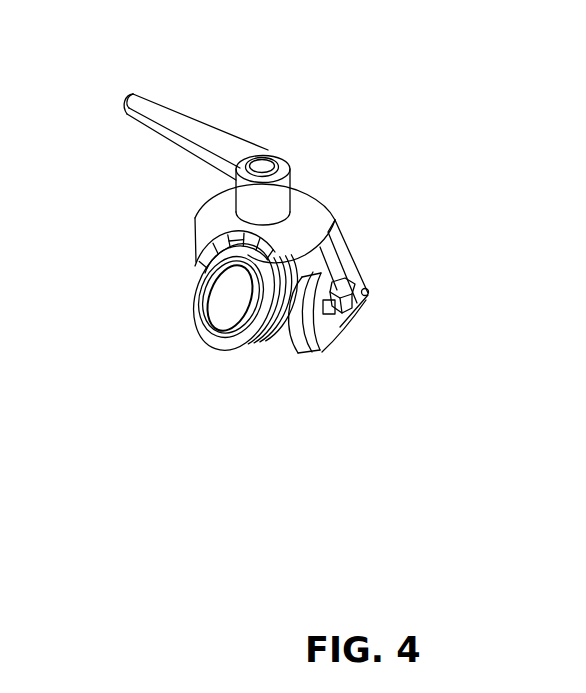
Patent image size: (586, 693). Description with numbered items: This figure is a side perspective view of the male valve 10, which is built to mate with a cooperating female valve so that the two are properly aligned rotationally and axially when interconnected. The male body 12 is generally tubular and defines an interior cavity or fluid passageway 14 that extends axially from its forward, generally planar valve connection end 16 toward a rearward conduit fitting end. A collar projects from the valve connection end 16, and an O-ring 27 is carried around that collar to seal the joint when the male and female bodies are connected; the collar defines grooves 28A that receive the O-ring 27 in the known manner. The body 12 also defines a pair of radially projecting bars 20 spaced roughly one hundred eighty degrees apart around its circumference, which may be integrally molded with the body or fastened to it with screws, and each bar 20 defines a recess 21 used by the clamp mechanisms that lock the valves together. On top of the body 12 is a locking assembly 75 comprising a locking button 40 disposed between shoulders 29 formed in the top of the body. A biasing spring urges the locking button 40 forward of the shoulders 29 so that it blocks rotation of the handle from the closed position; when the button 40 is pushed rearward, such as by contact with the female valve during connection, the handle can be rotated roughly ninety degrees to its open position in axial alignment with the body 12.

The male valve 10 is at (397, 116).
The male body 12 is at (323, 270).
The interior cavity or fluid passageway 14 is at (221, 340).
The valve connection end 16 is at (232, 360).
The radially projecting bars 20 is at (318, 348).
The recess 21 is at (337, 320).
The O-ring 27 is at (267, 353).
The grooves 28A is at (290, 353).
The shoulders 29 is at (222, 282).
The locking button 40 is at (203, 270).
The locking assembly 75 is at (194, 231).